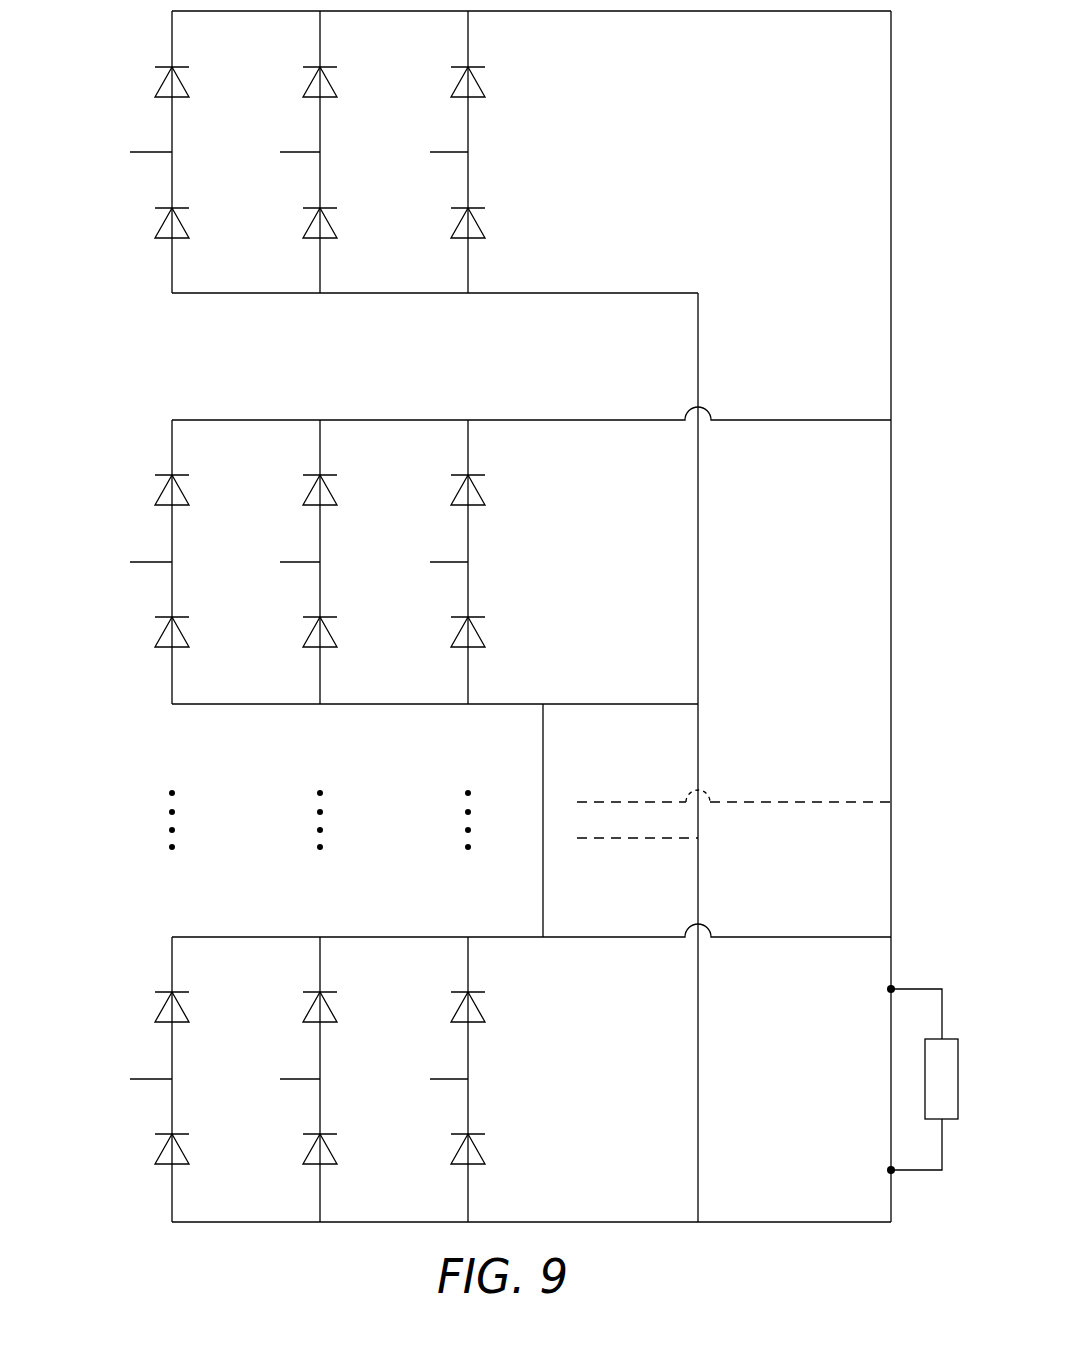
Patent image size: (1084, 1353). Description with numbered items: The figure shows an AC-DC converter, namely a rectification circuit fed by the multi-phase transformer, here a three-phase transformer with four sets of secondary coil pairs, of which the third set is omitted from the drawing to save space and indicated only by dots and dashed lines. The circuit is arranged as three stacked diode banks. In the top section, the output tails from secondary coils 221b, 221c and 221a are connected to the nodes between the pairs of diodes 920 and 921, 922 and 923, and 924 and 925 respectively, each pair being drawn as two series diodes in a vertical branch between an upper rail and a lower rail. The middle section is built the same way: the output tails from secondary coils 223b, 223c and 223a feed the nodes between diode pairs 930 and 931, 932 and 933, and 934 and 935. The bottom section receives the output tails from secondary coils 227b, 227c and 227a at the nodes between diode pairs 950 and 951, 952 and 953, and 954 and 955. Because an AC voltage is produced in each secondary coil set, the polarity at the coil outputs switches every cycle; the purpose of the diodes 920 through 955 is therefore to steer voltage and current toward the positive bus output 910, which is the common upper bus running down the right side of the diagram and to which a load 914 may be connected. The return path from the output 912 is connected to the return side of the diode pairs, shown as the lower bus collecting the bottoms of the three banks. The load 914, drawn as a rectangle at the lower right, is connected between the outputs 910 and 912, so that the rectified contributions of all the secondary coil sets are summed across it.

The positive bus output 910 is at (782, 12).
The output 912 is at (699, 580).
The load 914 is at (925, 1079).
The diode 920 is at (189, 88).
The diode 921 is at (189, 229).
The diode 922 is at (337, 88).
The diode 923 is at (337, 229).
The diode 924 is at (485, 88).
The diode 925 is at (485, 229).
The diode 930 is at (189, 496).
The diode 931 is at (189, 638).
The diode 932 is at (337, 496).
The diode 933 is at (337, 638).
The diode 934 is at (485, 496).
The diode 935 is at (485, 638).
The diode 950 is at (189, 1013).
The diode 951 is at (189, 1155).
The diode 952 is at (337, 1013).
The diode 953 is at (337, 1155).
The diode 954 is at (485, 1013).
The diode 955 is at (485, 1155).
The secondary coil 221a is at (430, 152).
The secondary coil 221b is at (130, 152).
The secondary coil 221c is at (280, 152).
The secondary coil 223a is at (430, 562).
The secondary coil 223b is at (130, 562).
The secondary coil 223c is at (280, 562).
The secondary coil 227a is at (430, 1079).
The secondary coil 227b is at (130, 1079).
The secondary coil 227c is at (280, 1079).